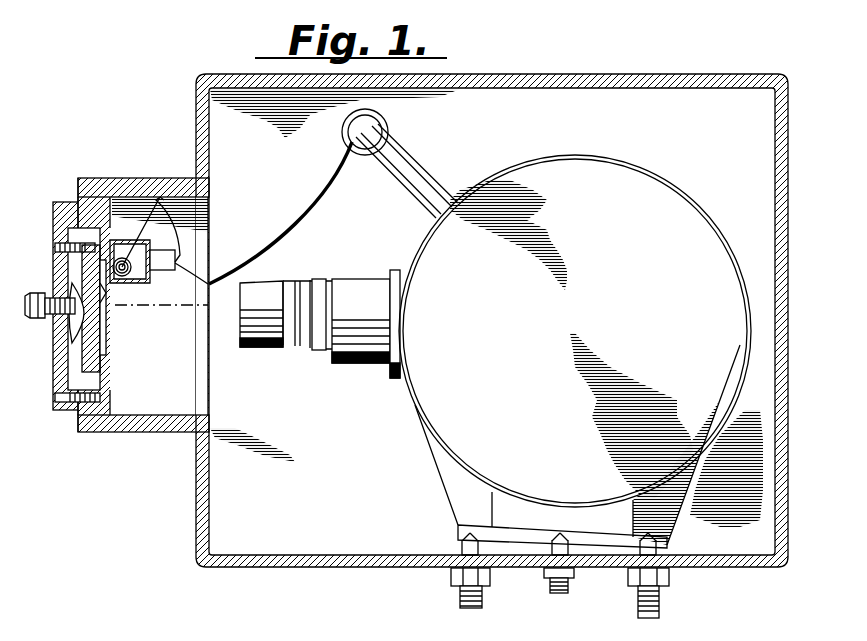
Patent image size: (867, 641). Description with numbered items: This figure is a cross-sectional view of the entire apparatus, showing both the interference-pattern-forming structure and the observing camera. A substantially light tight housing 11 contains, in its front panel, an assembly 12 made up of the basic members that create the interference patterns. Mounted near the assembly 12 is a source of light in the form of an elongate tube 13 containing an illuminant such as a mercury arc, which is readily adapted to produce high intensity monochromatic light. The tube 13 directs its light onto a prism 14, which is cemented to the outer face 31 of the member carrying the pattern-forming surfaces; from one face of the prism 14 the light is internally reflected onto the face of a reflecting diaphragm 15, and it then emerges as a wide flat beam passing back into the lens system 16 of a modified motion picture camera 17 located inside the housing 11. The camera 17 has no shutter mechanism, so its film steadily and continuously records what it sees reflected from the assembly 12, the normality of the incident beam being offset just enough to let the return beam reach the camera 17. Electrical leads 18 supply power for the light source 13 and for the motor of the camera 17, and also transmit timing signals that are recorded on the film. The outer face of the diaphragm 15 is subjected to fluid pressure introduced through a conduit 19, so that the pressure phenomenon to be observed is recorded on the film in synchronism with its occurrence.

The housing 11 is at (200, 505).
The assembly 12 is at (114, 333).
The elongate tube 13 is at (122, 258).
The prism 14 is at (104, 293).
The reflecting diaphragm 15 is at (80, 298).
The lens system 16 is at (262, 348).
The motion picture camera 17 is at (435, 410).
The electrical leads 18 is at (388, 185).
The conduit 19 is at (35, 316).
The outer face 31 is at (100, 312).